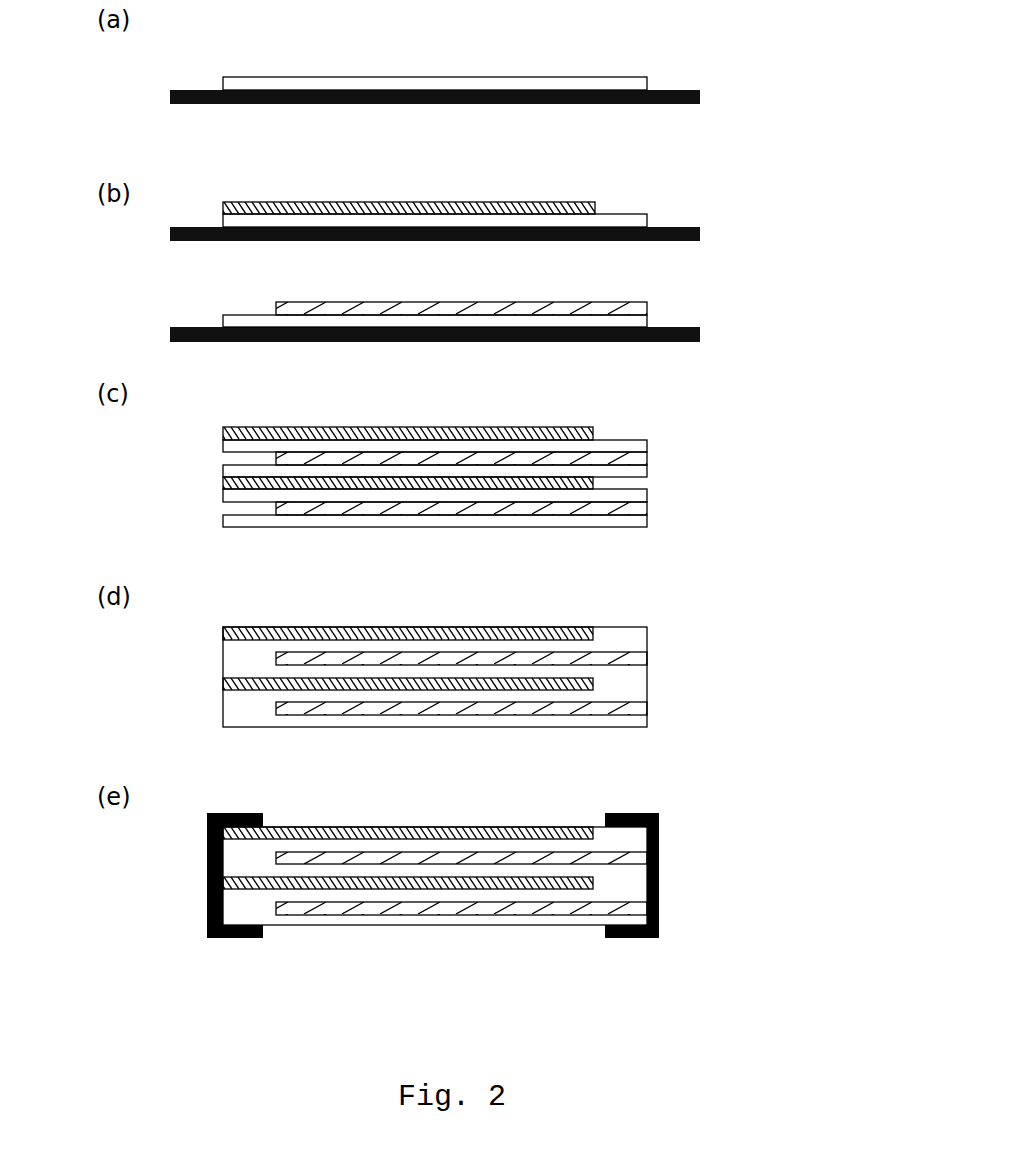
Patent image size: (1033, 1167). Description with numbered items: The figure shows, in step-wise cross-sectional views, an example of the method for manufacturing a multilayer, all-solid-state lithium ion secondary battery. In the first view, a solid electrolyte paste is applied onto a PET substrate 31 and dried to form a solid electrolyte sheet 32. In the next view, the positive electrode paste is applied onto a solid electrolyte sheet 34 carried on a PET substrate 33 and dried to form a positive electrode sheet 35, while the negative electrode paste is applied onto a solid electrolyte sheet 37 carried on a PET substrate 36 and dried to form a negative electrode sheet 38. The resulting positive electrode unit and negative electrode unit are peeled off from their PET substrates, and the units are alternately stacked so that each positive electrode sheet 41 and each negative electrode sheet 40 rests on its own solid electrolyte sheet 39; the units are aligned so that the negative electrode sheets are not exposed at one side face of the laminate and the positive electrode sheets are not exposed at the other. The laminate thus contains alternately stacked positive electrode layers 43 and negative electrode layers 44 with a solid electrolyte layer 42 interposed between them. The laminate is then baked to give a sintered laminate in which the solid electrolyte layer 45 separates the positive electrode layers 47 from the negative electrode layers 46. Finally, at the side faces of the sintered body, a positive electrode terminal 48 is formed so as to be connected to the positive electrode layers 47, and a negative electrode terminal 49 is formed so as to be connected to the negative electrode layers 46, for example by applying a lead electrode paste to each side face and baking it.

The PET substrate 31 is at (505, 103).
The solid electrolyte sheet 32 is at (467, 85).
The PET substrate 33 is at (560, 242).
The solid electrolyte sheet 34 is at (620, 220).
The positive electrode sheet 35 is at (330, 202).
The PET substrate 36 is at (555, 342).
The solid electrolyte sheet 37 is at (300, 320).
The negative electrode sheet 38 is at (620, 305).
The solid electrolyte sheet 39 is at (223, 497).
The negative electrode sheet 40 is at (640, 458).
The positive electrode sheet 41 is at (282, 428).
The solid electrolyte layer 42 is at (625, 640).
The positive electrode layer 43 is at (232, 633).
The negative electrode layer 44 is at (625, 658).
The solid electrolyte layer 45 is at (630, 837).
The negative electrode layer 46 is at (638, 858).
The positive electrode layer 47 is at (228, 815).
The positive electrode terminal 48 is at (240, 938).
The negative electrode terminal 49 is at (605, 938).